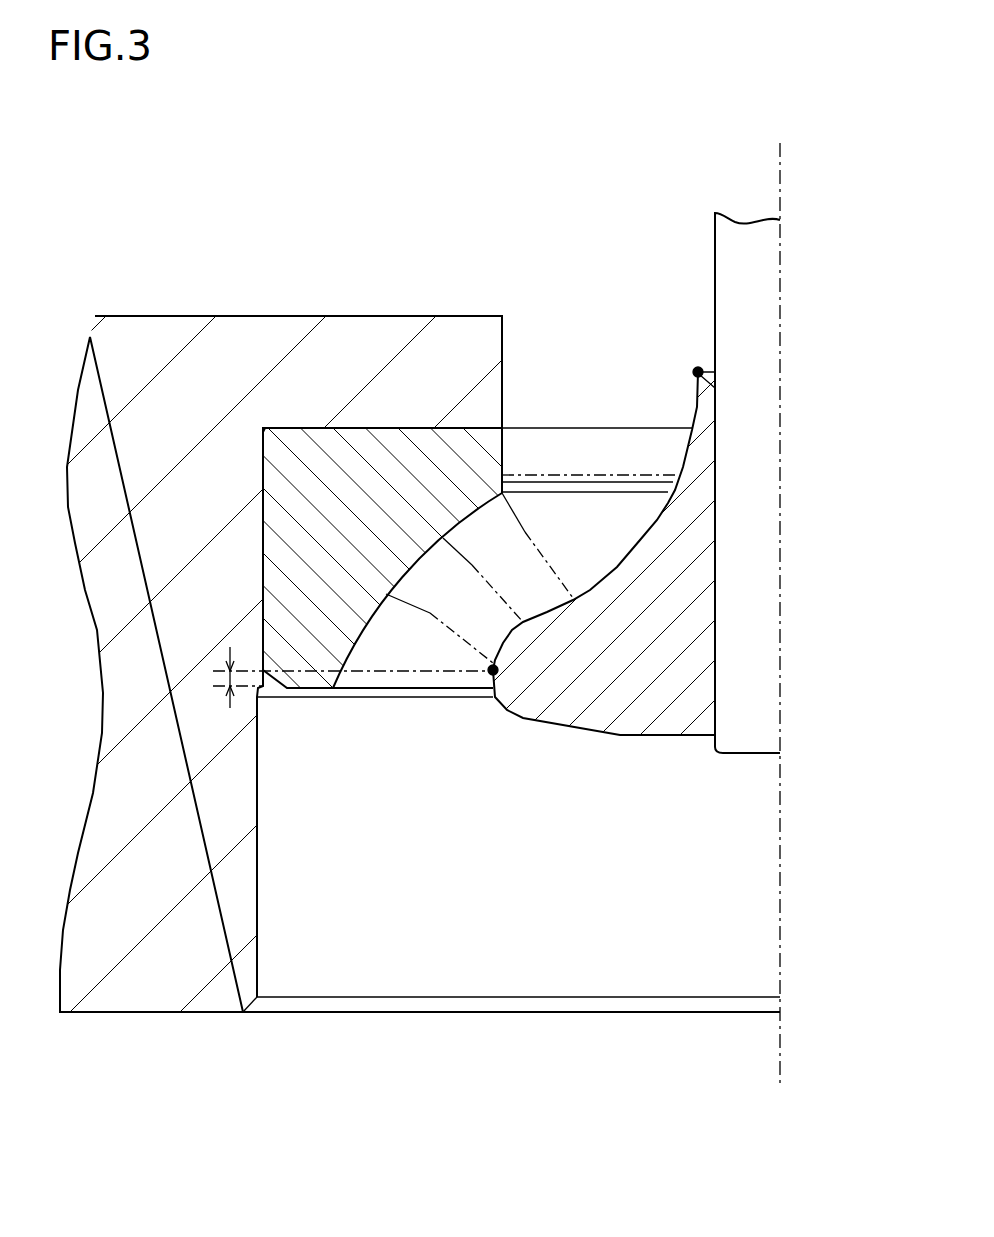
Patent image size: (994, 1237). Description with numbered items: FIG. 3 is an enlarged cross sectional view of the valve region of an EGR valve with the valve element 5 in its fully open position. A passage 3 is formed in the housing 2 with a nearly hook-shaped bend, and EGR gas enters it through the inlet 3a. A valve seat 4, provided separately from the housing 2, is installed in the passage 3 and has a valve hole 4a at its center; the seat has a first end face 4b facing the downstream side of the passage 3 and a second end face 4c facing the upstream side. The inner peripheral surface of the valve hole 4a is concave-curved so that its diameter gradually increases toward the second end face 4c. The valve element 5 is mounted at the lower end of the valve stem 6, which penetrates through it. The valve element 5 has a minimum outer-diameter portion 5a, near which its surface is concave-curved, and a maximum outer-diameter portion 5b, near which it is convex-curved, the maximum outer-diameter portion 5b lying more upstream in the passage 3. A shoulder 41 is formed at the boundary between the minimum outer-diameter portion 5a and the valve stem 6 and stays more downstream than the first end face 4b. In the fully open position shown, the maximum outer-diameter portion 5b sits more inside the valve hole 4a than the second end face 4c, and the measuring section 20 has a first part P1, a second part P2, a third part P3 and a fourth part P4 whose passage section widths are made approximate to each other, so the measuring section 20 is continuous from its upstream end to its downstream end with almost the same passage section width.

The housing 2 is at (130, 1012).
The passage 3 is at (204, 197).
The inlet 3a is at (258, 958).
The valve seat 4 is at (263, 582).
The valve hole 4a is at (505, 448).
The first end face 4b is at (315, 427).
The second end face 4c is at (313, 688).
The valve element 5 is at (678, 743).
The minimum outer-diameter portion 5a is at (696, 372).
The maximum outer-diameter portion 5b is at (488, 674).
The valve stem 6 is at (760, 290).
The measuring section 20 is at (405, 645).
The shoulder 41 is at (708, 368).
The first part P1 is at (581, 462).
The second part P2 is at (540, 544).
The third part P3 is at (481, 573).
The fourth part P4 is at (428, 600).